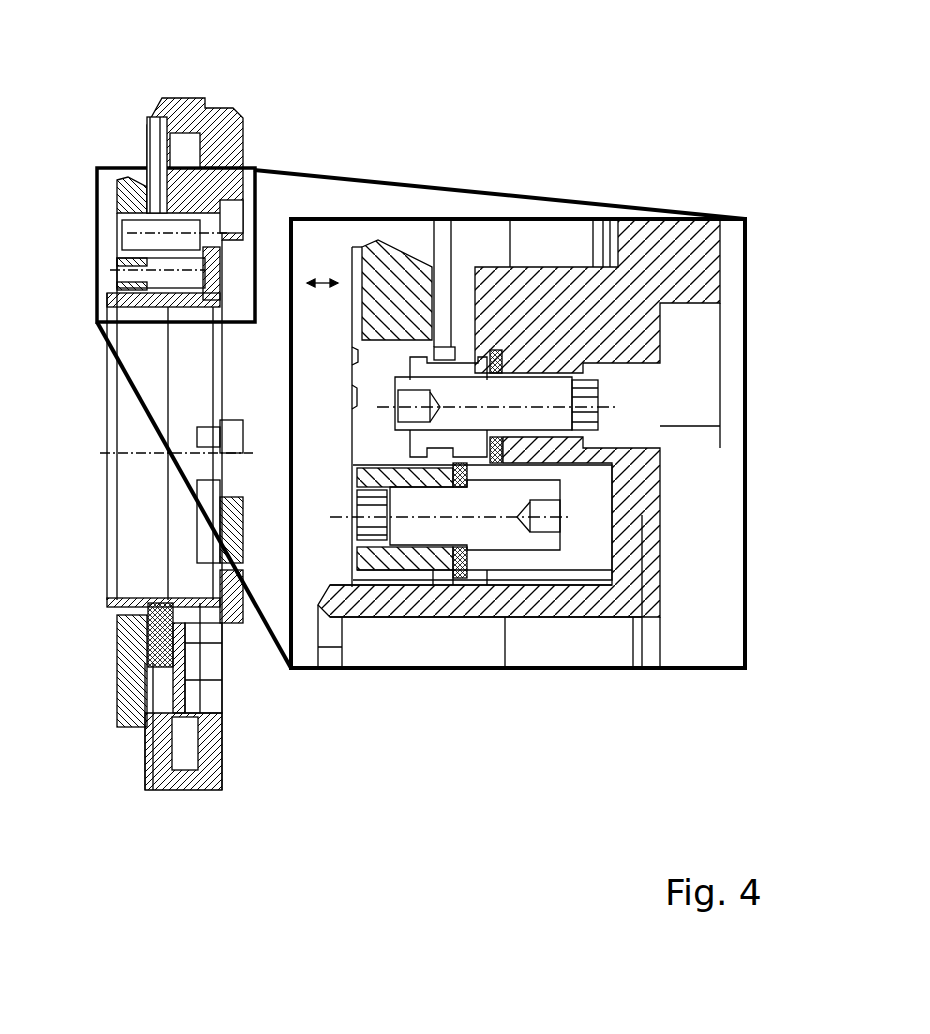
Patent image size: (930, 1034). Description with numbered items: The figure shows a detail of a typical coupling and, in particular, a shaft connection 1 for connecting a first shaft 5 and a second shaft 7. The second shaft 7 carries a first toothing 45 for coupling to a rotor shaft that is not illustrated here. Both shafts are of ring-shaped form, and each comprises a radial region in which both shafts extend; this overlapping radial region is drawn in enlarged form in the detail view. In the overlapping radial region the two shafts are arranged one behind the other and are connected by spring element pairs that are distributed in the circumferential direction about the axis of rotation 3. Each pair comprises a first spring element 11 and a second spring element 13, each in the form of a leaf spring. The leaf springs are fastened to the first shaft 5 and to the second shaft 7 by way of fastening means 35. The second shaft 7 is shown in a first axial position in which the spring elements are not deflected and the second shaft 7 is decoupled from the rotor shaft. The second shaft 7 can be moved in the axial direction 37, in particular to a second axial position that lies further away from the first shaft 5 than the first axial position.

The shaft connection 1 is at (82, 63).
The axis of rotation 3 is at (100, 453).
The first shaft 5 is at (567, 270).
The second shaft 7 is at (388, 240).
The first spring element 11 is at (500, 340).
The second spring element 13 is at (460, 590).
The fastening means 35 is at (598, 383).
The axial direction 37 is at (322, 275).
The first toothing 45 is at (345, 250).